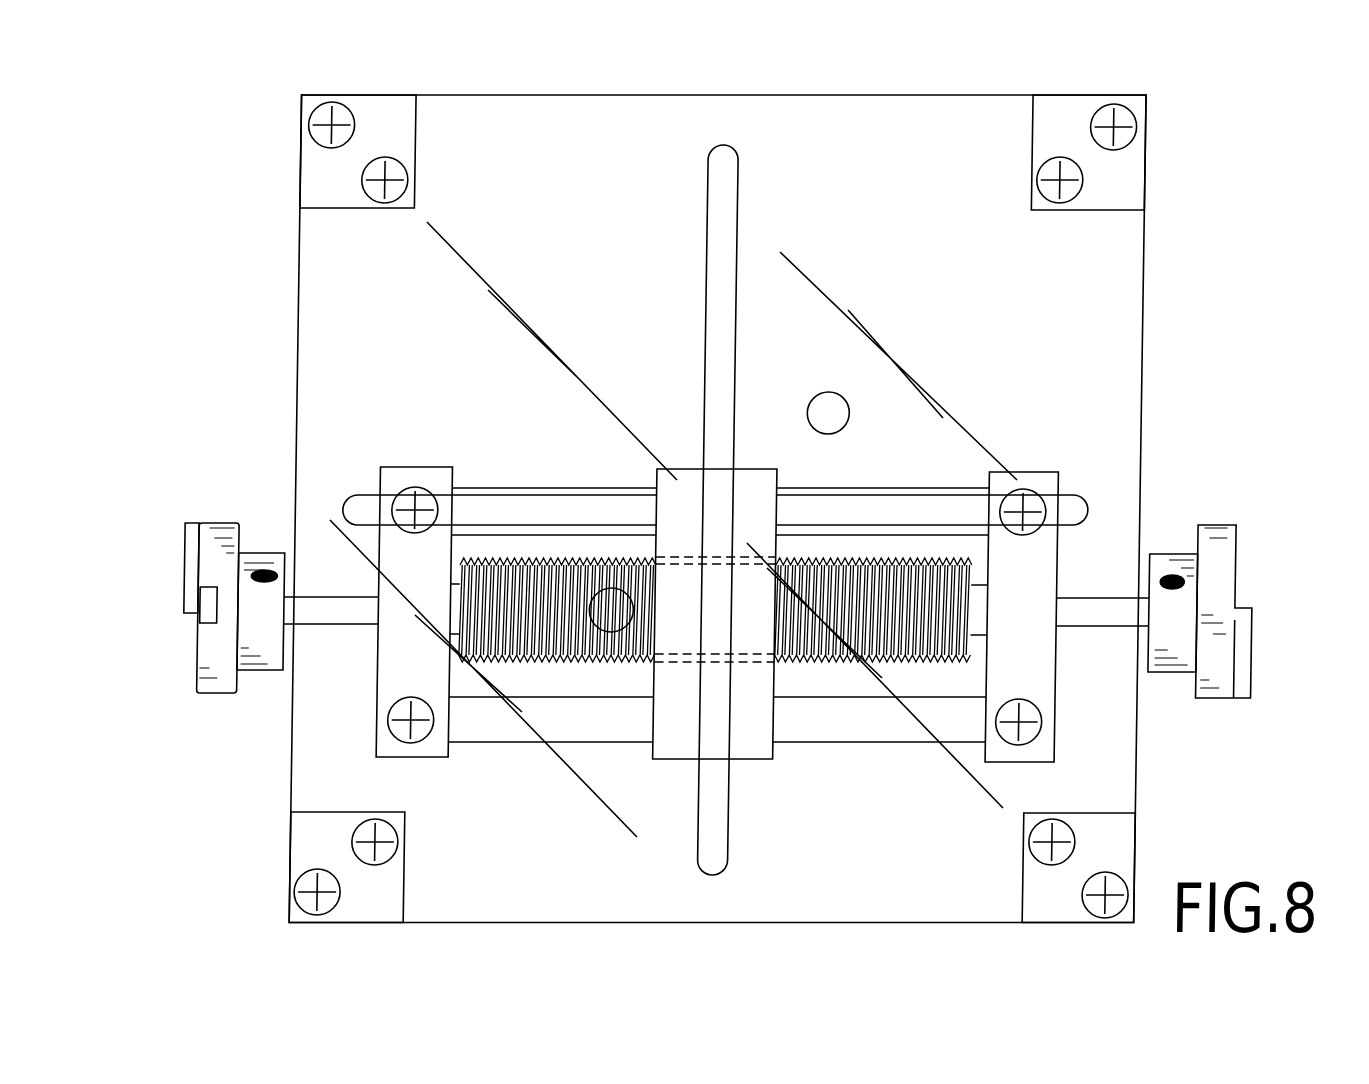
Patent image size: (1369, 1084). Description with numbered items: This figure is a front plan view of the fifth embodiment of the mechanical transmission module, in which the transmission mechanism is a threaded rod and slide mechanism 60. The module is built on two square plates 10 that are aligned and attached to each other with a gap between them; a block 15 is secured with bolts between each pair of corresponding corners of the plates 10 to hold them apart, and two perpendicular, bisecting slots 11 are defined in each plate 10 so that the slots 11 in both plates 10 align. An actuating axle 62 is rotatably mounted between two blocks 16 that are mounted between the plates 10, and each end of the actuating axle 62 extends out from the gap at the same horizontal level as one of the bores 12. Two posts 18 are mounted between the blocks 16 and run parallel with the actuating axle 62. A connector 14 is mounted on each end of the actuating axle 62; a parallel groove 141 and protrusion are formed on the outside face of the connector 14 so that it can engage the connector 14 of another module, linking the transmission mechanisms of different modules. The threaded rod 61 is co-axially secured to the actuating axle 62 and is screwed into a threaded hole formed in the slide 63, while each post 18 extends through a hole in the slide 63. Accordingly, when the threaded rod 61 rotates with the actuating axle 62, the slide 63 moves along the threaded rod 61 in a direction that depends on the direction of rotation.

The plate 10 is at (1128, 292).
The slot 11 is at (1078, 515).
The bore 12 is at (828, 393).
The connector 14 is at (720, 579).
The block 15 is at (1132, 181).
The block 16 is at (1017, 470).
The post 18 is at (861, 728).
The threaded rod and slide mechanism 60 is at (620, 374).
The threaded rod 61 is at (863, 577).
The actuating axle 62 is at (1097, 618).
The slide 63 is at (756, 480).
The groove 141 is at (209, 613).